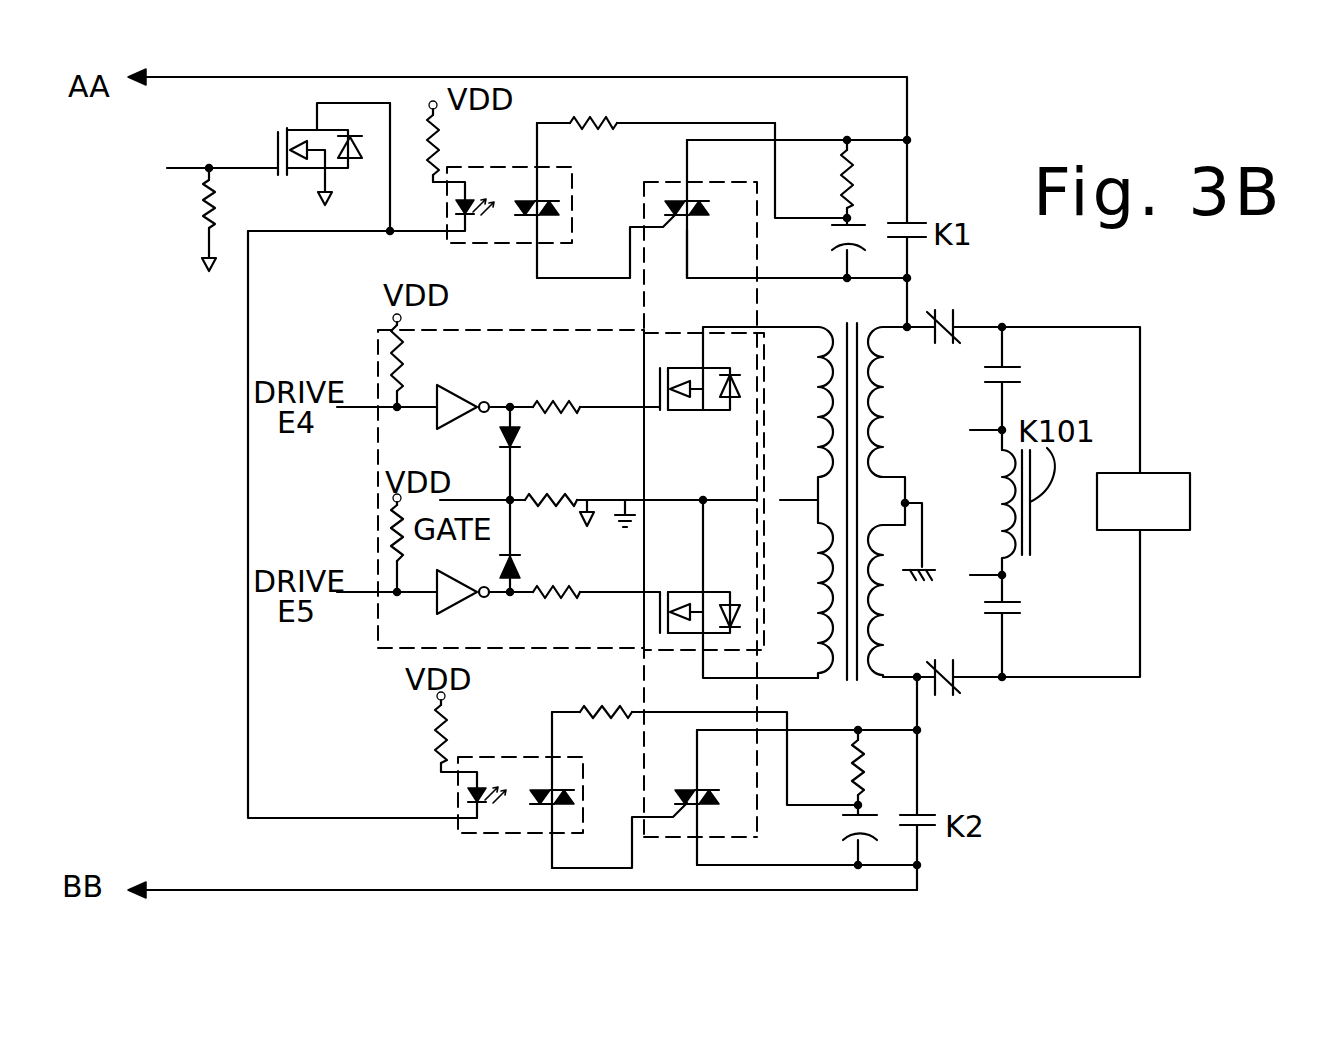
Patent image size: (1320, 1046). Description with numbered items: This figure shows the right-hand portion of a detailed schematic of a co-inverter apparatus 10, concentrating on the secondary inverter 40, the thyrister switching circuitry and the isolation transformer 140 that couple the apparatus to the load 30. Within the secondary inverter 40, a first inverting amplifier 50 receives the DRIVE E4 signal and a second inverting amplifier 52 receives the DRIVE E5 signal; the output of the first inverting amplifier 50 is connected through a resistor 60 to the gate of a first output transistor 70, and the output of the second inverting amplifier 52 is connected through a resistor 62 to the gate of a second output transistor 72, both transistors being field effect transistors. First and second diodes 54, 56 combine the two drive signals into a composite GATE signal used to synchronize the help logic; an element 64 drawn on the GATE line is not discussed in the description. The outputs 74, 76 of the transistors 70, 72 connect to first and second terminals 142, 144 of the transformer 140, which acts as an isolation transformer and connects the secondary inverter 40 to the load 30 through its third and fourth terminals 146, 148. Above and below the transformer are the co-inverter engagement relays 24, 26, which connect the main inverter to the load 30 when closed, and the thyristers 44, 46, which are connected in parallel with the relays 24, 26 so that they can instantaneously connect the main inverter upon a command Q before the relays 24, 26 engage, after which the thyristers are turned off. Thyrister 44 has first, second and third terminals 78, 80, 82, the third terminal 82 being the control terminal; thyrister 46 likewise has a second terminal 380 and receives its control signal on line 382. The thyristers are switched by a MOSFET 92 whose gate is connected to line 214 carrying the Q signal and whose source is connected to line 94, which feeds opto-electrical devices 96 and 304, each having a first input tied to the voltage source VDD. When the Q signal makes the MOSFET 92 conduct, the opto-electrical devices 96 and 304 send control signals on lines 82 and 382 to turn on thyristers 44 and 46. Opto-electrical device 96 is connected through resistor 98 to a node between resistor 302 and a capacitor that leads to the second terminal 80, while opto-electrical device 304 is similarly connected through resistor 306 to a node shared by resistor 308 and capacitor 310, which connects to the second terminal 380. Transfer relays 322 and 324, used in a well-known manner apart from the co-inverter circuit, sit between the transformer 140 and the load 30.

The co-inverter apparatus 10 is at (1123, 791).
The co-inverter engagement relay 24 is at (913, 217).
The co-inverter engagement relay 26 is at (918, 812).
The load 30 is at (1160, 530).
The secondary inverter 40 is at (378, 525).
The thyrister 44 is at (684, 200).
The thyrister 46 is at (697, 788).
The first inverting amplifier 50 is at (490, 396).
The second inverting amplifier 52 is at (460, 608).
The first diode 54 is at (515, 445).
The second diode 56 is at (518, 558).
The resistor 60 is at (560, 405).
The resistor 62 is at (580, 597).
The gate pull resistor 64 is at (528, 500).
The first output transistor 70 is at (722, 412).
The second output transistor 72 is at (720, 592).
The output of transistor 70 74 is at (743, 327).
The output of transistor 72 76 is at (718, 695).
The first terminal 78 is at (700, 150).
The second terminal 80 is at (697, 232).
The third terminal 82 is at (632, 253).
The MOSFET 92 is at (312, 170).
The line 94 is at (249, 262).
The opto-electrical device 96 is at (486, 243).
The resistor 98 is at (617, 125).
The transformer 140 is at (867, 325).
The first terminal 142 is at (797, 304).
The second terminal 144 is at (827, 678).
The third transformer terminal 146 is at (892, 332).
The fourth transformer terminal 148 is at (910, 676).
The line 214 is at (188, 166).
The resistor 302 is at (852, 170).
The opto-electrical device 304 is at (837, 220).
The resistor 306 is at (598, 704).
The resistor 308 is at (860, 767).
The capacitor 310 is at (847, 836).
The transfer relay 322 is at (952, 684).
The transfer relay 324 is at (955, 322).
The second terminal 380 is at (698, 850).
The line 382 is at (655, 855).